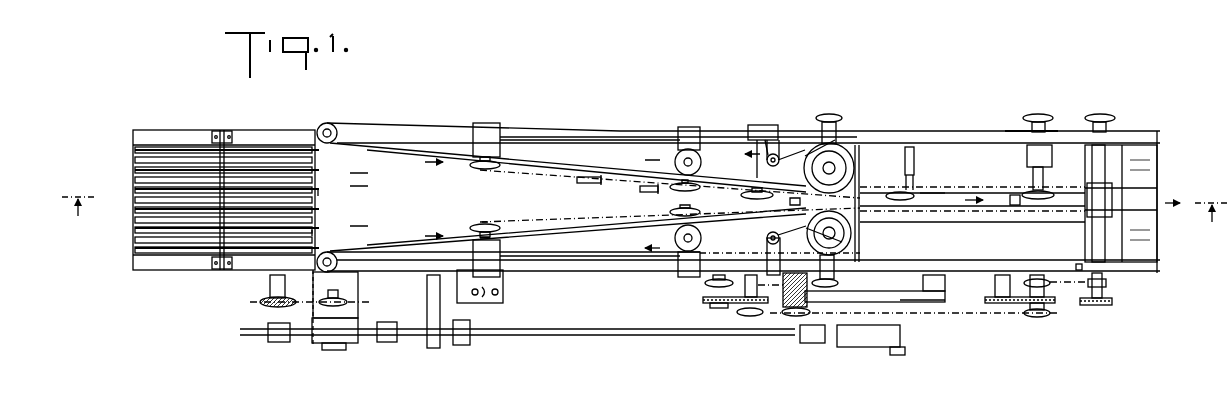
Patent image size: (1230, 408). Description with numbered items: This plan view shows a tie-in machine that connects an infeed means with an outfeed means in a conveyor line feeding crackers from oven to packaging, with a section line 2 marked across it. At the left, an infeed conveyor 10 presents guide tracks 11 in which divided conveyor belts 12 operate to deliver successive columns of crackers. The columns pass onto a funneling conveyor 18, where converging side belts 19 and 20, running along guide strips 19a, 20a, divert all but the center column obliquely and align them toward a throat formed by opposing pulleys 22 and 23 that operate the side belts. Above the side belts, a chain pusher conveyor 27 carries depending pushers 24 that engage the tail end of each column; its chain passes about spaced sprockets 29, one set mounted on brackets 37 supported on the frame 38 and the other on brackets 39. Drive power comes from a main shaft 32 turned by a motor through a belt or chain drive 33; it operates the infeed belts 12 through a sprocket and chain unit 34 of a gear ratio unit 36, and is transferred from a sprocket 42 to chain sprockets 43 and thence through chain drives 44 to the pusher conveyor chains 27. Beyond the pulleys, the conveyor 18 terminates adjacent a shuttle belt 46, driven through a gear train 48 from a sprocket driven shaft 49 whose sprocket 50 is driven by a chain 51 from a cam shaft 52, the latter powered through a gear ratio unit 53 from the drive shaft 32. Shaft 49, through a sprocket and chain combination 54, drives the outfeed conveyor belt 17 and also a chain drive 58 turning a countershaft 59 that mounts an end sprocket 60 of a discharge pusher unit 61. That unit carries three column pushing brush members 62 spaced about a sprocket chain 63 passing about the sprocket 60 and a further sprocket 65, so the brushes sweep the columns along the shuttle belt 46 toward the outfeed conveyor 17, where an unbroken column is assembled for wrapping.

The section line 2- 2 is at (645, 200).
The infeed conveyor 10 is at (177, 273).
The guide tracks 11 is at (166, 188).
The divided conveyor belts 12 is at (312, 233).
The outfeed conveyor belt 17 is at (1155, 198).
The funneling conveyor 18 is at (526, 180).
The side belt 19 is at (322, 166).
The guide strip 19a is at (407, 150).
The side belt 20 is at (340, 254).
The guide strip 20a is at (405, 242).
The pulley 22 is at (848, 160).
The pulley 23 is at (850, 236).
The depending pusher 24 is at (603, 188).
The chain pusher conveyor 27 is at (560, 178).
The sprockets 29 is at (668, 210).
The main shaft 32 is at (566, 337).
The belt or chain drive 33 is at (427, 302).
The sprocket and chain unit 34 is at (262, 300).
The gear ratio unit 36 is at (312, 341).
The brackets 37 is at (505, 267).
The frame 38 is at (606, 272).
The brackets 39 is at (688, 278).
The sprocket 42 is at (840, 285).
The chain sprockets 43 is at (853, 250).
The chain drives 44 is at (764, 236).
The shuttle belt 46 is at (952, 210).
The gear train 48 is at (993, 306).
The sprocket driven shaft 49 is at (1048, 290).
The sprocket 50 is at (1040, 320).
The chain 51 is at (947, 320).
The cam shaft 52 is at (893, 355).
The gear ratio unit 53 is at (860, 346).
The sprocket and chain combination 54 is at (1113, 283).
The chain drive 58 is at (1058, 118).
The countershaft 59 is at (1030, 178).
The end sprocket 60 is at (1043, 190).
The discharge pusher unit 61 is at (960, 190).
The brush members 62 is at (1012, 218).
The sprocket chain 63 is at (928, 193).
The sprocket 65 is at (747, 194).